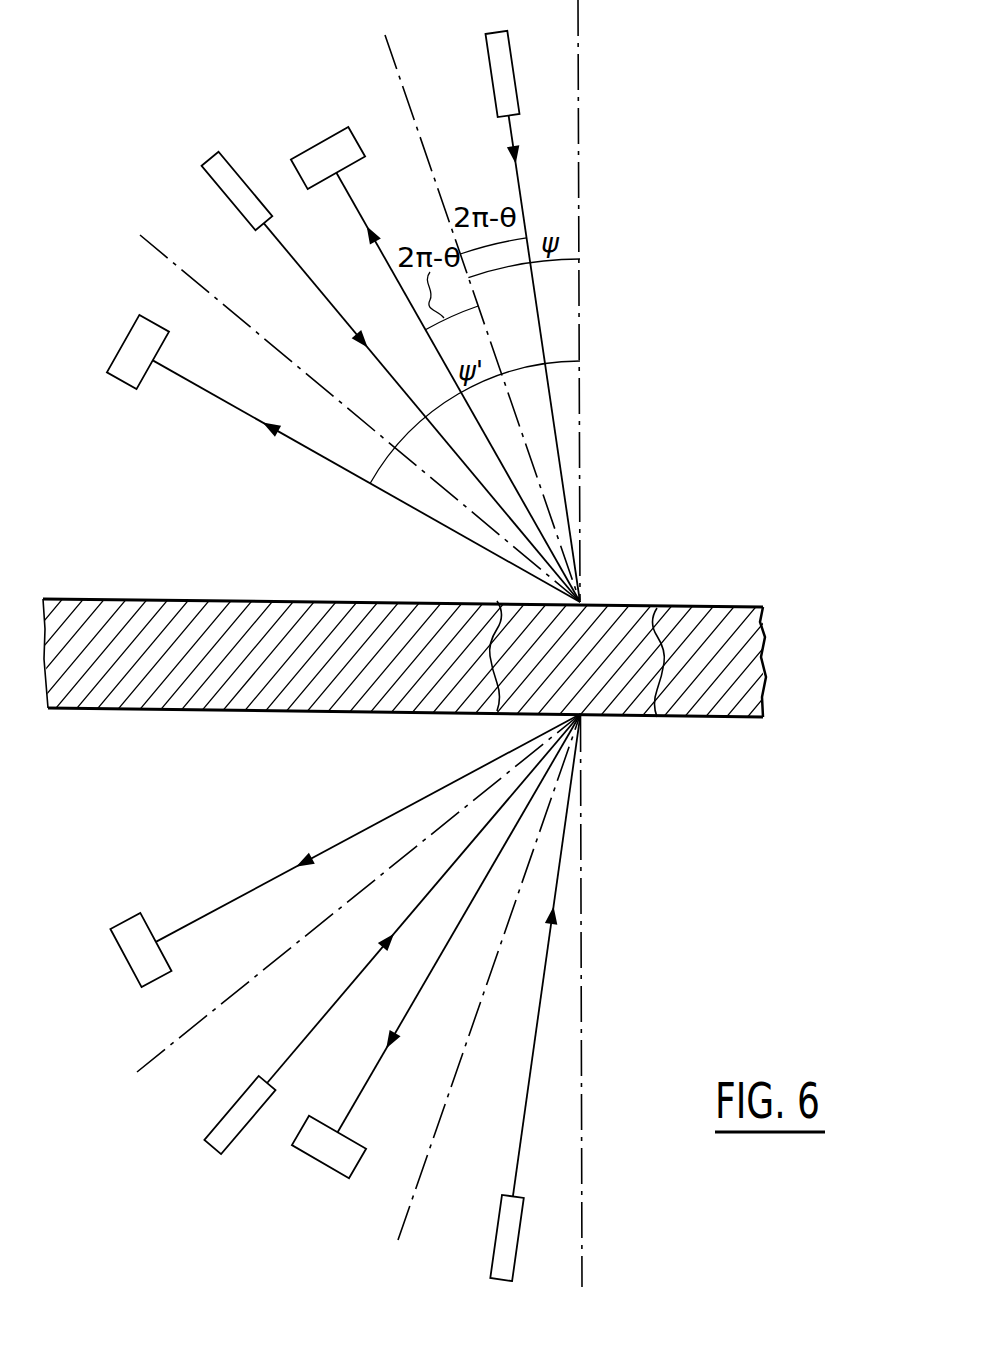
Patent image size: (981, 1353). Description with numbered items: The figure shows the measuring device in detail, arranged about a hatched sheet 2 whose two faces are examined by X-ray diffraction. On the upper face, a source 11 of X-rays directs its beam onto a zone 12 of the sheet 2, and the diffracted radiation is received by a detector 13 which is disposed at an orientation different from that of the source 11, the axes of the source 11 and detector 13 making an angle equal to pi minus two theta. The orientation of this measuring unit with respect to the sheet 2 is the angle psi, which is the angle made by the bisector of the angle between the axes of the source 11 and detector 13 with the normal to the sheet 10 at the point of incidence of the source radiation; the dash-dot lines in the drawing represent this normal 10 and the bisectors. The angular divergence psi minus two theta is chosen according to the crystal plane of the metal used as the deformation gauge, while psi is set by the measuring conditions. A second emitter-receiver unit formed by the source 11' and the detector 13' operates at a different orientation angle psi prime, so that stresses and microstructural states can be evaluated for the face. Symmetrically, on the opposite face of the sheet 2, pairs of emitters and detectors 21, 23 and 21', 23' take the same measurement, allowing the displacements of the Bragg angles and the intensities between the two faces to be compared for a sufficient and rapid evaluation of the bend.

The sheet 2 is at (188, 596).
The normal to the sheet 10 is at (580, 172).
The source of X-rays 11 is at (533, 314).
The second X-ray source 11' is at (391, 356).
The zone of the sheet face 12 is at (628, 632).
The detector 13 is at (435, 343).
The second detector 13' is at (341, 458).
The emitter on opposite face 21 is at (535, 1012).
The second emitter on opposite face 21' is at (369, 954).
The detector on opposite face 23 is at (436, 973).
The second detector on opposite face 23' is at (345, 872).